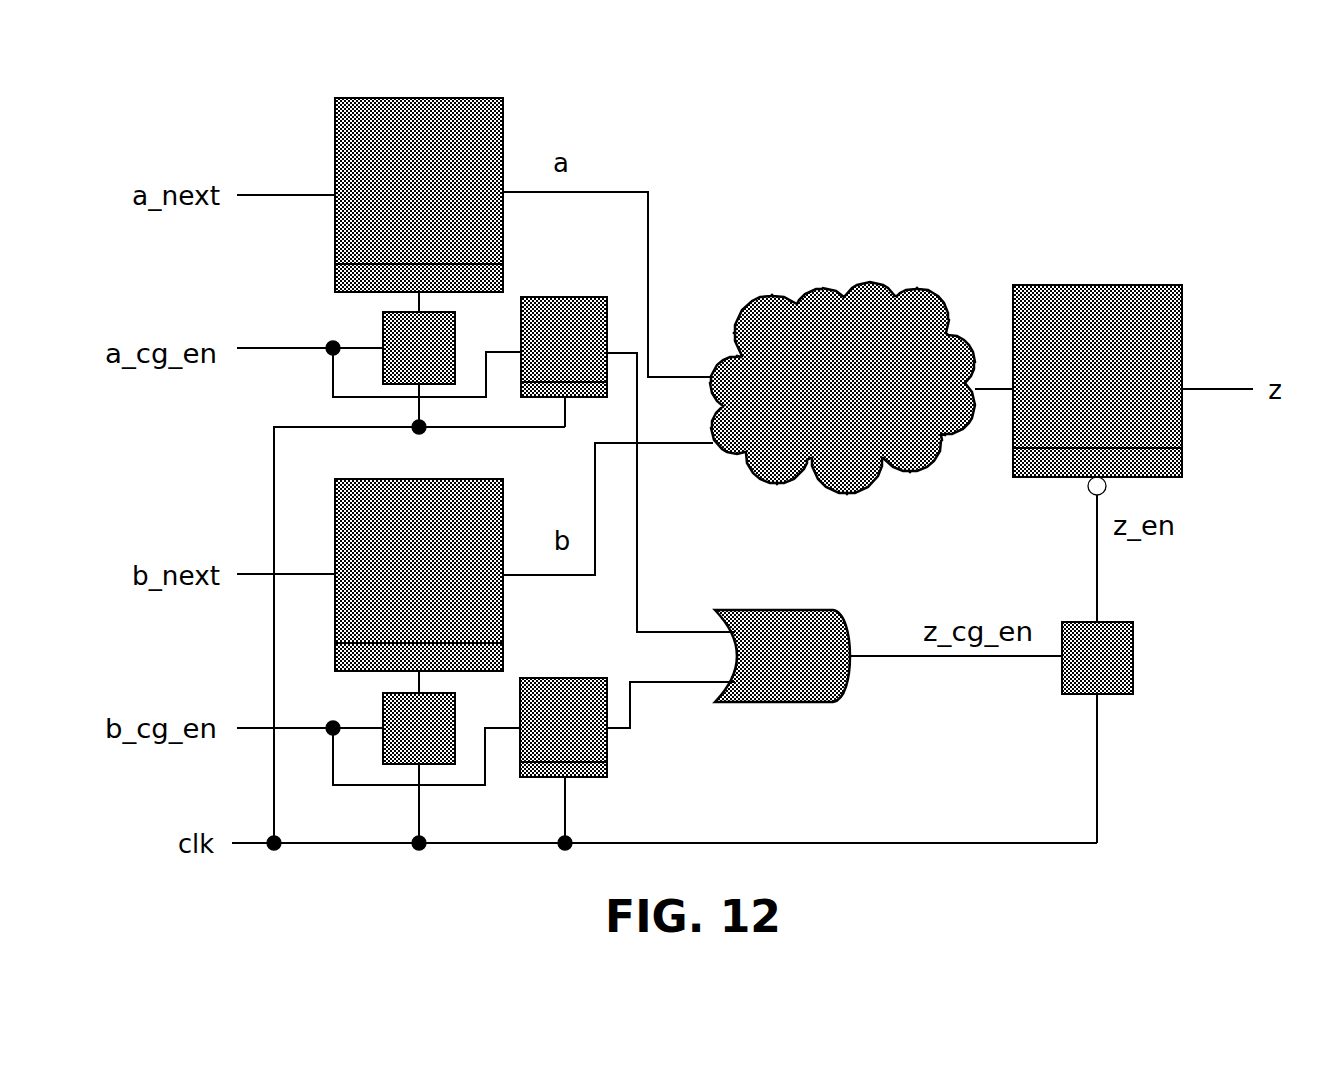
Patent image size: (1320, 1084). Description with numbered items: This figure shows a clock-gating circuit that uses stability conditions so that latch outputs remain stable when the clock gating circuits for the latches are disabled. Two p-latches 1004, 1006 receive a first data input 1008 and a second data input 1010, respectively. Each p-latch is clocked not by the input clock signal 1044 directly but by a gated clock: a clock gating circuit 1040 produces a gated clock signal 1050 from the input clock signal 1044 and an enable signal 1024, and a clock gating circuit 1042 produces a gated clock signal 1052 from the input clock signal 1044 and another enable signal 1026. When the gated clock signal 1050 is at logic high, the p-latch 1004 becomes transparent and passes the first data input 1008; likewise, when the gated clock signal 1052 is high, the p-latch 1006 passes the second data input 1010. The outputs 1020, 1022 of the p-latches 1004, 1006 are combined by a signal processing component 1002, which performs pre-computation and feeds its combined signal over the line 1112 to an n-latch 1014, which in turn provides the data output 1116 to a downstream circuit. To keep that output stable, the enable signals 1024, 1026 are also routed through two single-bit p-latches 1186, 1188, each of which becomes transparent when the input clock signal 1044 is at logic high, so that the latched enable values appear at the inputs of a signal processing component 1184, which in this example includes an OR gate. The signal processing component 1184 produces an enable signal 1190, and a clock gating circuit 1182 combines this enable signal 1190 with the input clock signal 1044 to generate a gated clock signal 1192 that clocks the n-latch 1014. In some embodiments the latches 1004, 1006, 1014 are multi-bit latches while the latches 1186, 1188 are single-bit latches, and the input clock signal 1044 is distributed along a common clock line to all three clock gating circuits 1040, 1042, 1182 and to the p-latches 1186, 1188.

The signal processing component 1002 is at (848, 478).
The p-latch 1004 is at (316, 132).
The p-latch 1006 is at (516, 513).
The first data input 1008 is at (259, 169).
The second data input 1010 is at (221, 549).
The n-latch 1014 is at (1104, 257).
The output 1020 is at (605, 164).
The output 1022 is at (561, 598).
The enable signal 1024 is at (259, 322).
The enable signal 1026 is at (232, 698).
The clock gating circuit 1040 is at (506, 295).
The clock gating circuit 1042 is at (350, 820).
The input clock signal 1044 is at (219, 873).
The gated clock signal 1050 is at (374, 302).
The gated clock signal 1052 is at (360, 683).
The cloud output line to L3 1112 is at (969, 320).
The data output 1116 is at (1236, 363).
The clock gating circuit 1182 is at (1146, 715).
The signal processing component 1184 is at (862, 723).
The p-latch 1186 is at (658, 258).
The p-latch 1188 is at (501, 772).
The enable signal 1190 is at (976, 695).
The gated clock signal 1192 is at (1145, 595).